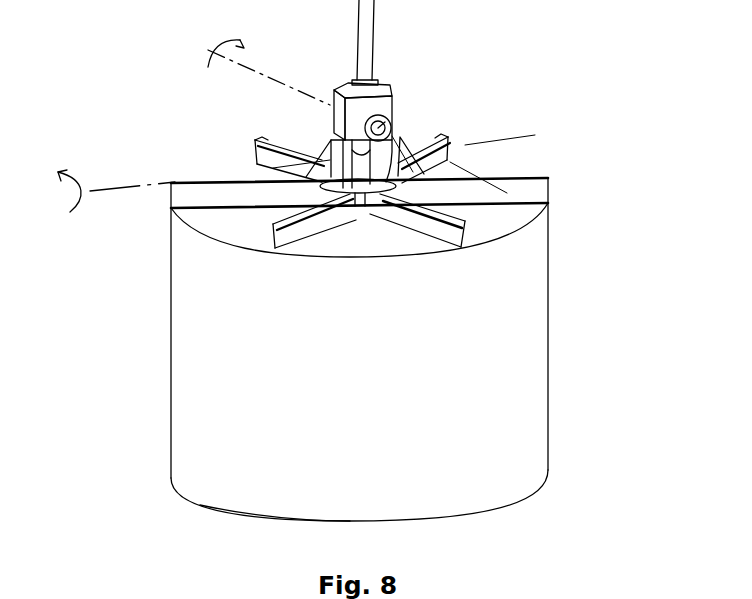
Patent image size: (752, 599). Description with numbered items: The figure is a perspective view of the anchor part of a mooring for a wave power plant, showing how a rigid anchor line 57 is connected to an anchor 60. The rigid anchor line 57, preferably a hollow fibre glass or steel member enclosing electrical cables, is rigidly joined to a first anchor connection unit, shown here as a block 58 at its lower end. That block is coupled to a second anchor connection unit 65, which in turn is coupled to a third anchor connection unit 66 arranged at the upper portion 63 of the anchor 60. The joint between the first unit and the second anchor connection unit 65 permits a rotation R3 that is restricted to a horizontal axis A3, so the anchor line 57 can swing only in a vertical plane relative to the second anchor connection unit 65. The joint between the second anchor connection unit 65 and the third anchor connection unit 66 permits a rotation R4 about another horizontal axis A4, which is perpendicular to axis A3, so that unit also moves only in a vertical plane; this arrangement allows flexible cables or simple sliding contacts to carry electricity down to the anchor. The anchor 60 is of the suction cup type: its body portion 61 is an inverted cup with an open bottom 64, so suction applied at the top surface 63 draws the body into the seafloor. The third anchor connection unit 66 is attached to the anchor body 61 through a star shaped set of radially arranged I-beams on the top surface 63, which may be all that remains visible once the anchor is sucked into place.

The rigid anchor line 57 is at (363, 33).
The joint block 58 is at (393, 100).
The anchor 60 is at (558, 163).
The body portion of the anchor 61 is at (558, 330).
The upper portion of the anchor 63 is at (510, 224).
The bottom of the anchor 64 is at (492, 517).
The second anchor connection unit 65 is at (338, 120).
The third anchor connection unit 66 is at (328, 157).
The horizontal axis A3 is at (277, 72).
The rotation R3 is at (232, 41).
The another horizontal axis A4 is at (193, 175).
The rotation R4 is at (73, 184).